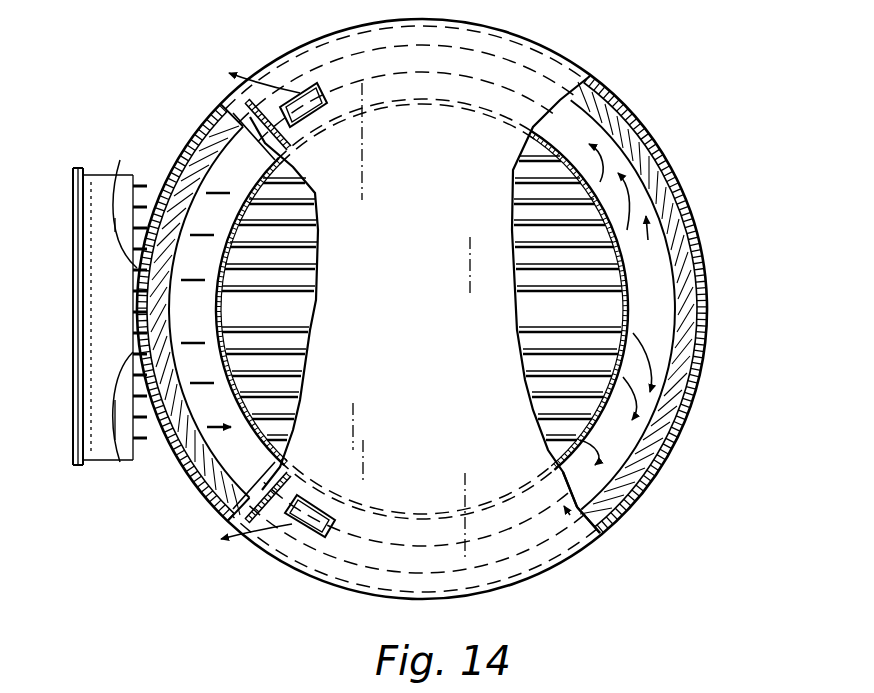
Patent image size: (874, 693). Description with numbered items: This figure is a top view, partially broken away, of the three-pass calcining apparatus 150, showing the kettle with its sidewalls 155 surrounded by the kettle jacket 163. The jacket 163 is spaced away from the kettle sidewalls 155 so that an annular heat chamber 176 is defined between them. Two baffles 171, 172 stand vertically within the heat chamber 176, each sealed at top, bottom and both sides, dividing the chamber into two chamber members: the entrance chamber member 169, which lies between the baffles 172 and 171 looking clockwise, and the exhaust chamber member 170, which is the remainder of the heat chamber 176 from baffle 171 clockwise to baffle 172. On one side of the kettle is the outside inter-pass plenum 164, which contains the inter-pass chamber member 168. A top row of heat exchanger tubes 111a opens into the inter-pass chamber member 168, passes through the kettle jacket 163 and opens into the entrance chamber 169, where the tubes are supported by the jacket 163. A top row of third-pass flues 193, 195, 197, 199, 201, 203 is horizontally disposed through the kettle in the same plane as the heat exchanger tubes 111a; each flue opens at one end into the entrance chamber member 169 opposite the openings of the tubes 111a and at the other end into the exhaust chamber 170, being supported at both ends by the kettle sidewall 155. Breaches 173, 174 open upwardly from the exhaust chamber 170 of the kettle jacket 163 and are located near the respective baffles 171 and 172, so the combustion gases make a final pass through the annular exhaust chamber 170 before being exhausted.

The three-pass calcining apparatus 150 is at (634, 80).
The kettle sidewalls 155 is at (657, 317).
The kettle jacket 163 is at (668, 452).
The outside inter-pass plenum 164 is at (74, 402).
The inter-pass chamber member 168 is at (93, 273).
The entrance chamber member 169 is at (187, 180).
The exhaust chamber member 170 is at (660, 322).
The baffle 171 is at (220, 142).
The baffle 172 is at (210, 478).
The breach 173 is at (303, 97).
The breach 174 is at (312, 540).
The annular heat chamber 176 is at (588, 518).
The third-pass flue 193 is at (516, 188).
The third-pass flue 195 is at (520, 240).
The third-pass flue 197 is at (520, 276).
The third-pass flue 199 is at (518, 343).
The third-pass flue 201 is at (522, 382).
The third-pass flue 203 is at (540, 423).
The heat exchanger tubes 111a is at (150, 190).